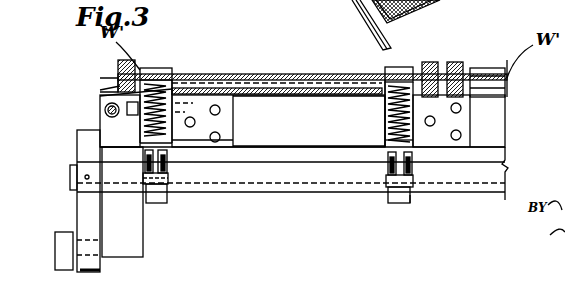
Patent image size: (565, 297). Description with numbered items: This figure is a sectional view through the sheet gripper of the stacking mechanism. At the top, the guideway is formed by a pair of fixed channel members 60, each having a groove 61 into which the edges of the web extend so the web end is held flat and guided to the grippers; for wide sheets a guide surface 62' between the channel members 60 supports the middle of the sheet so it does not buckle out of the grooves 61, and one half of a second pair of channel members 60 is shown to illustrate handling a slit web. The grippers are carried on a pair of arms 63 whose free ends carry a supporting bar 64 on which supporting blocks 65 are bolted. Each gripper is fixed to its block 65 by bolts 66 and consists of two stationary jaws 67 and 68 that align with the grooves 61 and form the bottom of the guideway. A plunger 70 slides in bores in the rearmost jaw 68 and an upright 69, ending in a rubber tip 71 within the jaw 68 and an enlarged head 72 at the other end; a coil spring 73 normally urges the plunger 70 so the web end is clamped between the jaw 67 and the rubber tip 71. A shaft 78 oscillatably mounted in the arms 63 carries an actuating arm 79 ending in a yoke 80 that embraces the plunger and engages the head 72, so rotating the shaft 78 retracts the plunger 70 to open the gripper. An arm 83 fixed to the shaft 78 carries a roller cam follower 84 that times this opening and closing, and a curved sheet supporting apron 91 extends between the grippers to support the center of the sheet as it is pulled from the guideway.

The fixed channel members 60 is at (118, 76).
The groove 61 is at (117, 80).
The guide surface 62' is at (312, 58).
The arms 63 is at (135, 238).
The supporting bar 64 is at (290, 127).
The supporting blocks 65 is at (226, 122).
The bolts 66 is at (385, 143).
The stationary jaw 67 is at (160, 69).
The rearmost jaw 68 is at (190, 74).
The upright 69 is at (172, 148).
The plunger 70 is at (147, 120).
The rubber tip 71 is at (153, 68).
The enlarged head 72 is at (168, 184).
The coil spring 73 is at (105, 122).
The shaft 78 is at (272, 188).
The actuating arm 79 is at (407, 203).
The yoke 80 is at (167, 162).
The arm 83 is at (77, 208).
The roller cam follower 84 is at (60, 240).
The curved sheet supporting apron 91 is at (305, 76).